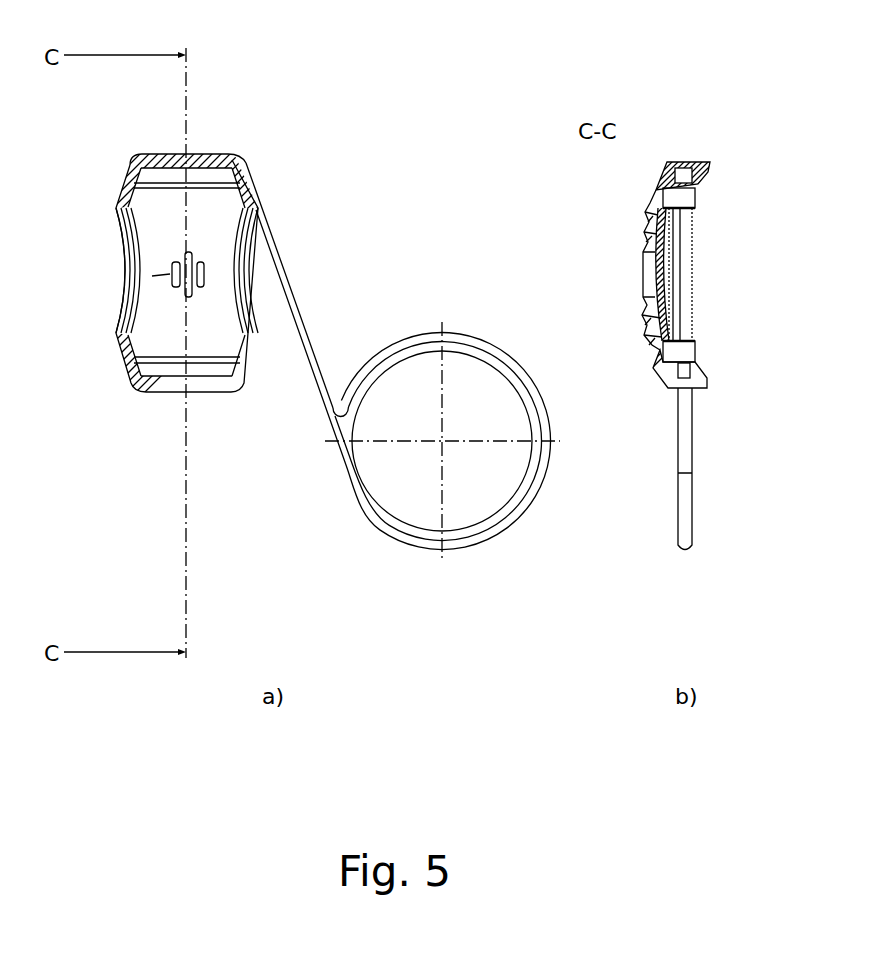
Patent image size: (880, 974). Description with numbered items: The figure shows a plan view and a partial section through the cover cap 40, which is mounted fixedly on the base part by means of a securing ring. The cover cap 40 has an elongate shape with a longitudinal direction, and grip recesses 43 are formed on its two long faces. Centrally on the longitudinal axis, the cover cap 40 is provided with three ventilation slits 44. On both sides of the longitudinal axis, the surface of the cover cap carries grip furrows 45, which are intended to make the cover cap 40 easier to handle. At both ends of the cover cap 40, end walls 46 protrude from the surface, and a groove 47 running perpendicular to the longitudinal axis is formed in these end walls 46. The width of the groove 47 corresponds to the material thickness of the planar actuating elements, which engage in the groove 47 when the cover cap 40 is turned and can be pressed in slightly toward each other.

The cover cap 40 is at (102, 378).
The grip recesses 43 is at (121, 233).
The ventilation slits 44 is at (132, 292).
The grip furrows 45 is at (658, 190).
The end walls 46 is at (690, 164).
The groove 47 is at (217, 165).